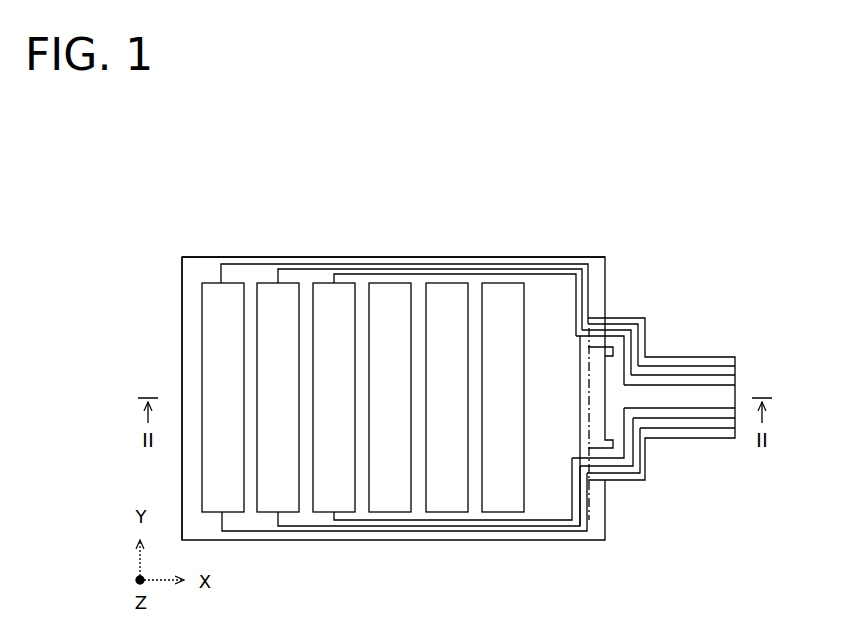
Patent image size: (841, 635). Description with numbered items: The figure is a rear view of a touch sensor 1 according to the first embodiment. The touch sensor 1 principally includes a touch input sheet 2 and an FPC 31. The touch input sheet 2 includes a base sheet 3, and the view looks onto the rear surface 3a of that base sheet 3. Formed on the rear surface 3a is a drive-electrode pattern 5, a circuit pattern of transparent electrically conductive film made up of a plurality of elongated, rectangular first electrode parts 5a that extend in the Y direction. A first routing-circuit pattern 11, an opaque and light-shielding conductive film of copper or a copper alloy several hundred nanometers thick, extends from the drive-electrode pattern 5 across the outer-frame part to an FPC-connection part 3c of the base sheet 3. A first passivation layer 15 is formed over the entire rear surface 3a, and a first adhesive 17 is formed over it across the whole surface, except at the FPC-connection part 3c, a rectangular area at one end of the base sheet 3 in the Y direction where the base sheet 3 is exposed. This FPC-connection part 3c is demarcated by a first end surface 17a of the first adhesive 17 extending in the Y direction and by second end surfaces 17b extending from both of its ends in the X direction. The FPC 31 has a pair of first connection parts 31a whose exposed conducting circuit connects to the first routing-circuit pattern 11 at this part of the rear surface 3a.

The touch sensor 1 is at (450, 180).
The touch input sheet 2 is at (322, 200).
The base sheet 3 is at (356, 250).
The rear surface 3a is at (199, 272).
The FPC-connection part 3c is at (620, 313).
The drive-electrode pattern 5 is at (455, 212).
The first electrode part 5a is at (447, 292).
The first routing-circuit pattern 11 is at (409, 264).
The first passivation layer 15 is at (607, 310).
The first adhesive 17 is at (537, 387).
The first end surface 17a is at (583, 412).
The second end surface 17b is at (613, 312).
The FPC 31 is at (682, 398).
The first connection part 31a is at (632, 315).